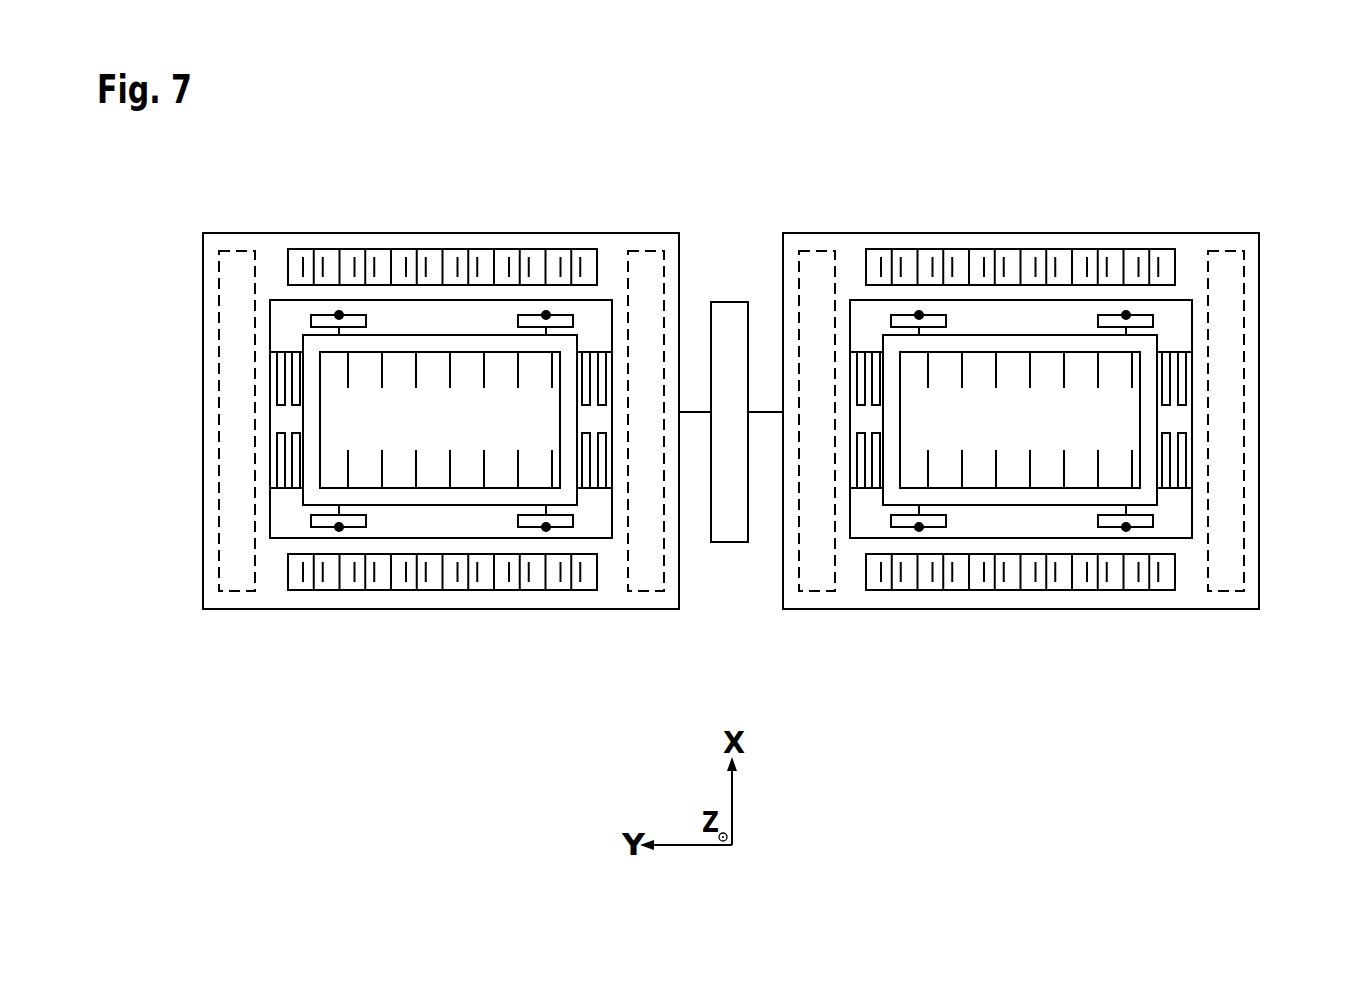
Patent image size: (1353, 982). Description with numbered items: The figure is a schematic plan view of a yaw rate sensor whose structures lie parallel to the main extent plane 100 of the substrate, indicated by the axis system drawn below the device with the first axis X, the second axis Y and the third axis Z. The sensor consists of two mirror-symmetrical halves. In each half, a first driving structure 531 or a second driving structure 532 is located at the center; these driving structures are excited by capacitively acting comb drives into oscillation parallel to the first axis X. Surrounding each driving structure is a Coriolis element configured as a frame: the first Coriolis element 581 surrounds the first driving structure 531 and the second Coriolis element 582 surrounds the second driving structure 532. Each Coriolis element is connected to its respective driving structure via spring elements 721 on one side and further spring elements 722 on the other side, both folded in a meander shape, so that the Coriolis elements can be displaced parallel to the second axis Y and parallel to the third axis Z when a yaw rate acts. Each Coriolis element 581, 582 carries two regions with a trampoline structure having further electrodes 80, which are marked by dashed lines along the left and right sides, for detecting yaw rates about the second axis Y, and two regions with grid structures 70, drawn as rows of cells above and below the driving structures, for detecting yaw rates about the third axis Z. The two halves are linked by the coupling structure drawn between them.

The grid structure 70 is at (383, 246).
The further electrode 80 is at (232, 295).
The main extent plane 100 is at (682, 788).
The first driving structure 531 is at (447, 344).
The second driving structure 532 is at (1004, 343).
The first Coriolis element 581 is at (614, 248).
The second Coriolis element 582 is at (1195, 250).
The spring element 721 is at (282, 373).
The further spring element 722 is at (1178, 385).